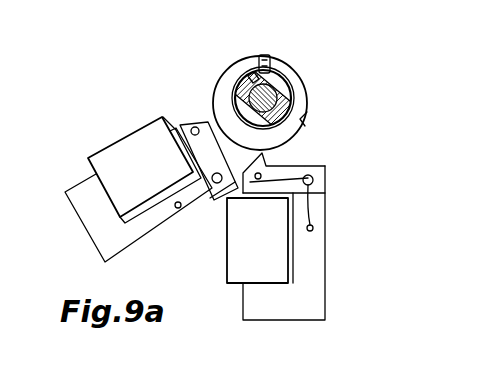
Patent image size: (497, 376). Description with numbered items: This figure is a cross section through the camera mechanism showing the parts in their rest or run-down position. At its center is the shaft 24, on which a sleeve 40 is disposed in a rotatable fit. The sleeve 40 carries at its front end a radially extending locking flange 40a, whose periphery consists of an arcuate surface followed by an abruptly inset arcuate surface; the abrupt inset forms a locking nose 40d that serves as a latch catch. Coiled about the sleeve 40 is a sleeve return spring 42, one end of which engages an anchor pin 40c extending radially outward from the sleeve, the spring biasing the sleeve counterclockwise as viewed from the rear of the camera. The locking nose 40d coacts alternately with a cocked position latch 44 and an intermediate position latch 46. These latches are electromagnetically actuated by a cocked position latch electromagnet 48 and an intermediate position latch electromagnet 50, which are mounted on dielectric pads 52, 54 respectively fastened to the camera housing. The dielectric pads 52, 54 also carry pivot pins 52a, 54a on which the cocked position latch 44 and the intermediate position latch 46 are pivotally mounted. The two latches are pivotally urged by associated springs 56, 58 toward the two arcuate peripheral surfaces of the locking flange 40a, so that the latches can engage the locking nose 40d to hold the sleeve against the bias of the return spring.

The shaft 24 is at (232, 97).
The sleeve 40 is at (235, 78).
The locking flange 40a is at (292, 69).
The anchor pin 40c is at (267, 55).
The locking nose 40d is at (308, 122).
The sleeve return spring 42 is at (250, 77).
The cocked position latch 44 is at (200, 115).
The intermediate position latch 46 is at (263, 158).
The cocked position latch electromagnet 48 is at (110, 146).
The intermediate position latch electromagnet 50 is at (233, 262).
The dielectric pad 52 is at (142, 242).
The pivot pin 52a is at (216, 184).
The dielectric pad 54 is at (318, 262).
The pivot pin 54a is at (313, 178).
The spring 56 is at (174, 200).
The spring 58 is at (317, 215).